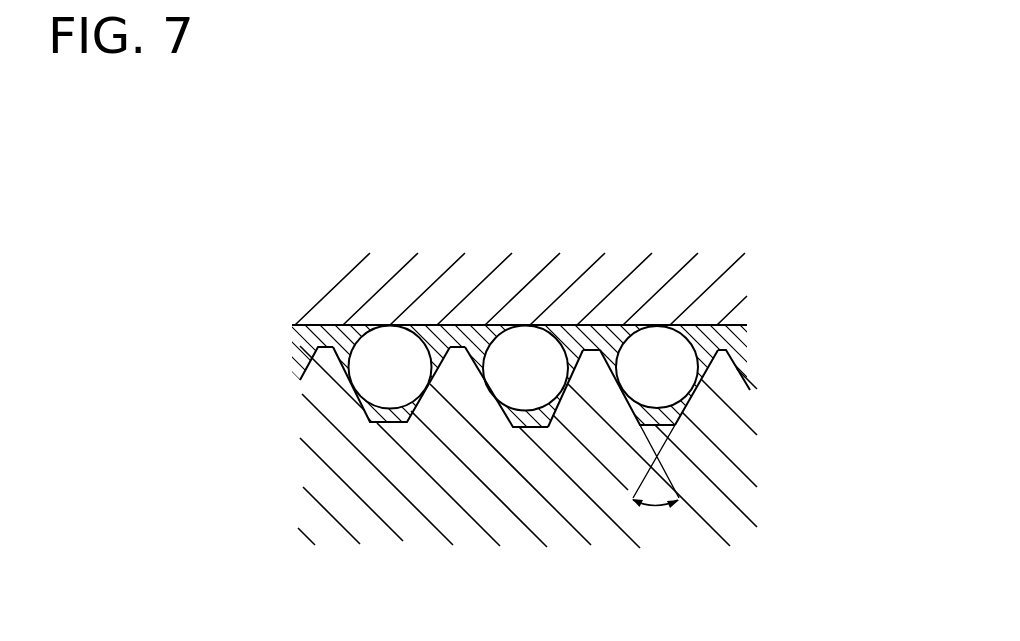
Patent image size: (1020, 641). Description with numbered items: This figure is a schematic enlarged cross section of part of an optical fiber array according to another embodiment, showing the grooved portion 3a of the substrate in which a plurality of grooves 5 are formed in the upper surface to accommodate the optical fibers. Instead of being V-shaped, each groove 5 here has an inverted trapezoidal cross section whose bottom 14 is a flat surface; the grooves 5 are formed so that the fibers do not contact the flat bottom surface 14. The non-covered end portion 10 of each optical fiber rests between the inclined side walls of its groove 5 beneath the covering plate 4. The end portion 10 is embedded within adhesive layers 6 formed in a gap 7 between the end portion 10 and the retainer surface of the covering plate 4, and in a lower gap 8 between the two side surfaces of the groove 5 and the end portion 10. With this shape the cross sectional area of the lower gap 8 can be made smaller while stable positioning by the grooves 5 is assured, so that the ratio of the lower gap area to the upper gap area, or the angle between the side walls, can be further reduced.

The covering plate 4 is at (372, 277).
The adhesive layer 6 is at (345, 338).
The gap 7 is at (453, 325).
The non-covered end portion 10 is at (525, 350).
The grooved portion 3a is at (357, 482).
The groove 5 is at (392, 432).
The bottom 14 is at (553, 418).
The gap 8 is at (404, 410).